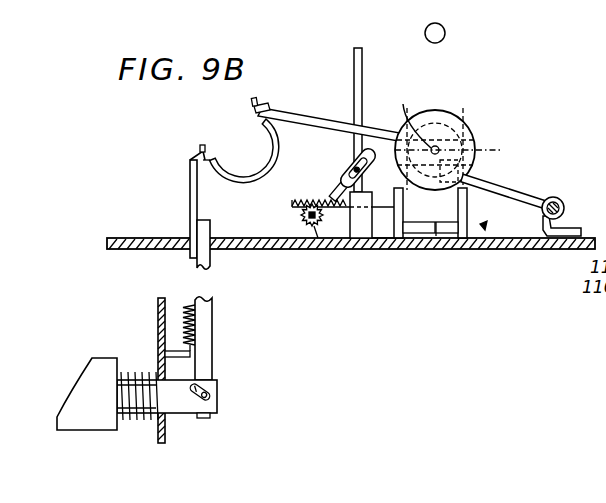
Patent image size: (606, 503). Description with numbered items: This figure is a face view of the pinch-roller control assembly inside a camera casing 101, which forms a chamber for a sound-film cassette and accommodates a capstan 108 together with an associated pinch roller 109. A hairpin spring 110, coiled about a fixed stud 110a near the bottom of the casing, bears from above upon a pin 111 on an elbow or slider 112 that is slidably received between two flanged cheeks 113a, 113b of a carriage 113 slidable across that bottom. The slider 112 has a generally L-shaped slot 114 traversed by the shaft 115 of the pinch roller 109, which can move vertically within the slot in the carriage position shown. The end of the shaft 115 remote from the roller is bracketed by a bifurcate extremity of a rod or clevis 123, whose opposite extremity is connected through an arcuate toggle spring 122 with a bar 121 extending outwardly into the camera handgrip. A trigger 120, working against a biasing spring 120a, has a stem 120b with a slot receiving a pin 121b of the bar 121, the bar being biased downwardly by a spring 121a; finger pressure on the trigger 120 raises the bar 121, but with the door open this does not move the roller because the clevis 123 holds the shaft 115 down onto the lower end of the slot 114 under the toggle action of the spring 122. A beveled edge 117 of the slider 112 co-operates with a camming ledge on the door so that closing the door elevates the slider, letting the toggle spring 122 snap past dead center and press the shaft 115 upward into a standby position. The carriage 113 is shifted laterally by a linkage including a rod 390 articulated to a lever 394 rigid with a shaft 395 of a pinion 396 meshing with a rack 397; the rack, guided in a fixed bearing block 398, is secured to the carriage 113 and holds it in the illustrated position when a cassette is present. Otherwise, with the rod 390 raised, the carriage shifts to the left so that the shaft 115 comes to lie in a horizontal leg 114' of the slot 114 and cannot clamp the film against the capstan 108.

The camera casing 101 is at (120, 237).
The capstan 108 is at (447, 33).
The pinch roller 109 is at (440, 109).
The hairpin spring 110 is at (500, 187).
The fixed stud 110a is at (556, 197).
The pin 111 is at (468, 206).
The elbow (slider) 112 is at (431, 235).
The carriage 113 is at (486, 228).
The flanged cheek 113a is at (397, 249).
The flanged cheek 113b is at (470, 249).
The L-shaped slot 114 is at (461, 134).
The horizontal leg of slot 114' is at (466, 142).
The shaft 115 is at (403, 106).
The beveled edge 117 is at (436, 238).
The trigger 120 is at (84, 393).
The biasing spring 120a is at (217, 382).
The stem 120b is at (185, 412).
The bar 121 is at (210, 300).
The spring 121a is at (184, 308).
The pin 121b is at (212, 393).
The arcuate toggle spring 122 is at (265, 180).
The rod (clevis) 123 is at (294, 110).
The rod 390 is at (355, 50).
The lever 394 is at (345, 176).
The shaft 395 is at (371, 249).
The pinion 396 is at (300, 217).
The rack 397 is at (292, 203).
The fixed bearing block 398 is at (387, 249).